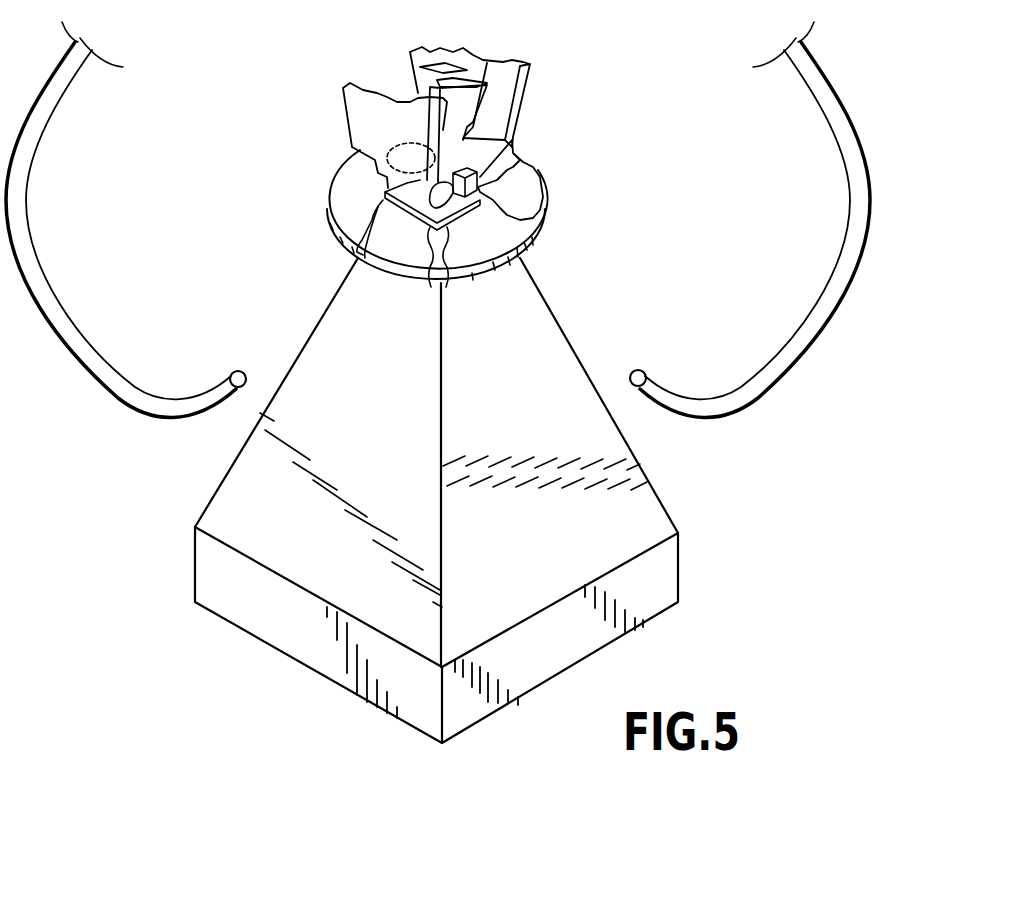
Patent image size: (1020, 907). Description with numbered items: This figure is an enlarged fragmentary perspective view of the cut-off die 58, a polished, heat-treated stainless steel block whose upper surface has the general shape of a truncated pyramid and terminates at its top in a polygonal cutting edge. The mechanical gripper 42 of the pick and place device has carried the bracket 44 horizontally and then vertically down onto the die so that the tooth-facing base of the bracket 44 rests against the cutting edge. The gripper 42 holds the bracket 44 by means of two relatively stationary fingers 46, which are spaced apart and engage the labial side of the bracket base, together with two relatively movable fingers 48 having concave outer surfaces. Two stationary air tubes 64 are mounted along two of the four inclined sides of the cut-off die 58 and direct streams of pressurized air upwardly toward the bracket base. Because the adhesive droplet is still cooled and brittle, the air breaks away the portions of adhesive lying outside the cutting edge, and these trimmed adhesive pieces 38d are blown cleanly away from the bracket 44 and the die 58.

The broken away adhesive pieces 38d is at (527, 174).
The mechanical gripper 42 is at (546, 72).
The bracket 44 is at (477, 187).
The relatively stationary fingers 46 is at (383, 192).
The relatively movable fingers 48 is at (457, 140).
The cut-off die 58 is at (243, 480).
The stationary air tubes 64 is at (85, 328).